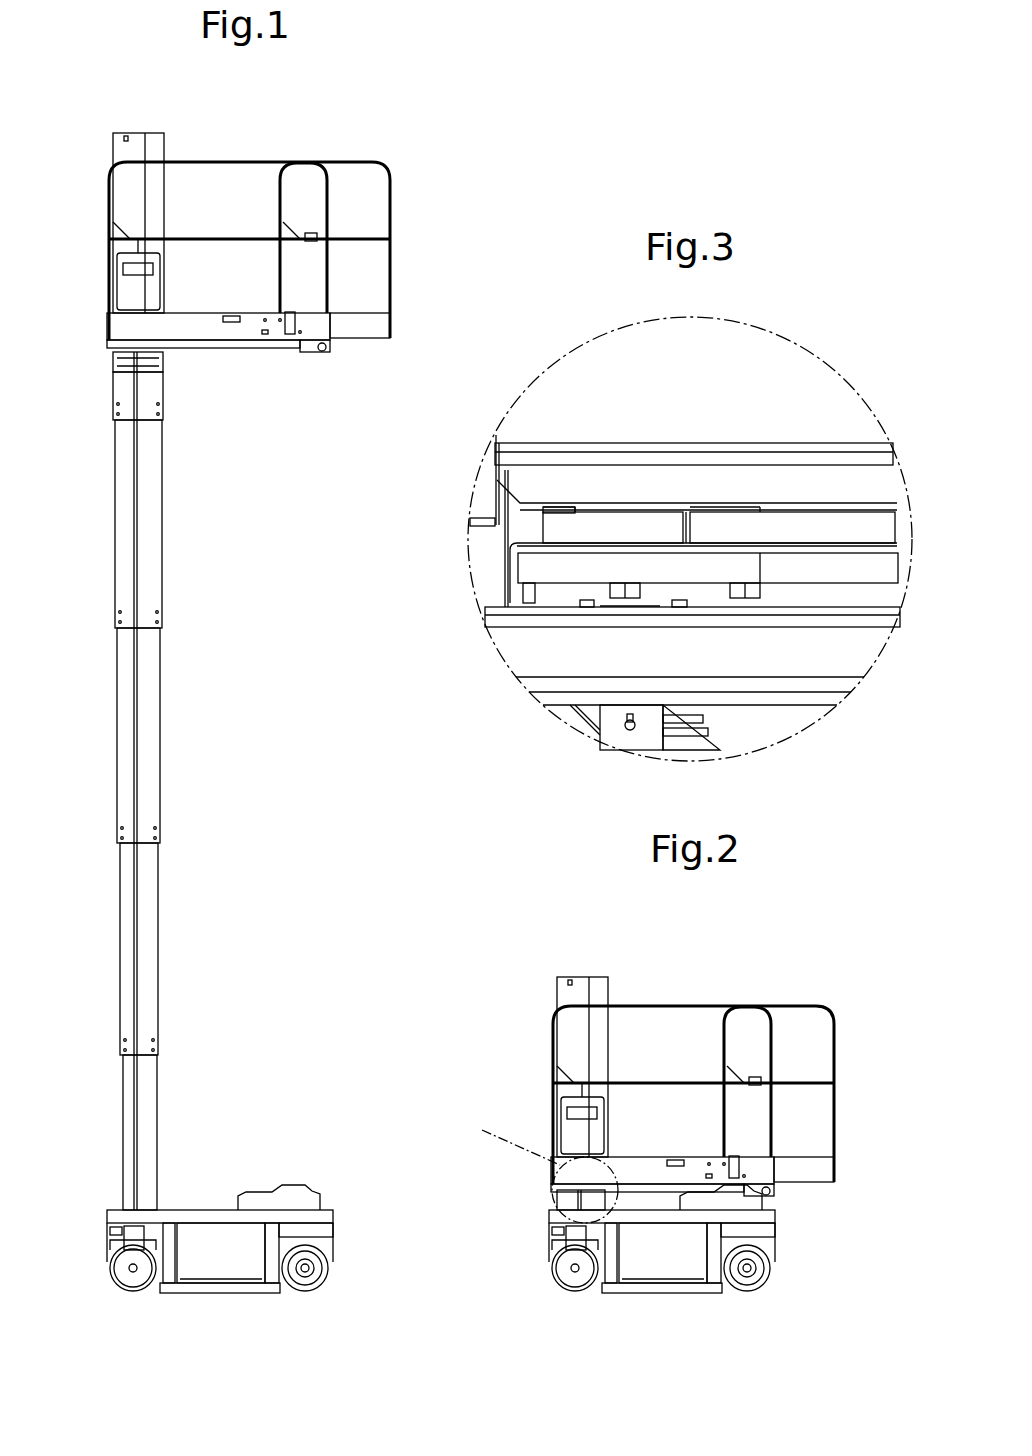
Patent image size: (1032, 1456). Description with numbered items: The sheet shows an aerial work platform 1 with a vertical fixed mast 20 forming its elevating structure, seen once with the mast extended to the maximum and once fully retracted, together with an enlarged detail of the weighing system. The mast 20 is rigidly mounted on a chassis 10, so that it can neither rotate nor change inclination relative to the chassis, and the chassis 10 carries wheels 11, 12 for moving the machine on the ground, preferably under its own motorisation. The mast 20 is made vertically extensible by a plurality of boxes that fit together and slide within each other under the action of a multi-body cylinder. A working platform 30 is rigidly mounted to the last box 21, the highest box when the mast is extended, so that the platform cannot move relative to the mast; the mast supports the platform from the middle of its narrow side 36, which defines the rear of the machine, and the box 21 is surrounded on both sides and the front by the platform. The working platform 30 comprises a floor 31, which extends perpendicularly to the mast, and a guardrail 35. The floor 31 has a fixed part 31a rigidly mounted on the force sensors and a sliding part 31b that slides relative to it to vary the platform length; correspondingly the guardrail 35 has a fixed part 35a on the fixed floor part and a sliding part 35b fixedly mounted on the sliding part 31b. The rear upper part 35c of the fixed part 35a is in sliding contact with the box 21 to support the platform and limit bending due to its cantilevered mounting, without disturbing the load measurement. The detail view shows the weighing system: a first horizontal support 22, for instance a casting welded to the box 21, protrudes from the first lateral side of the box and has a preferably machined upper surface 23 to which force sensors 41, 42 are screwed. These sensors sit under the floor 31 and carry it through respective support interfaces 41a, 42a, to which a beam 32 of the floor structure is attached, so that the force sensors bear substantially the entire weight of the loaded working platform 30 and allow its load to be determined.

In FIG. 1, the aerial work platform 1 is at (288, 718).
In FIG. 2, the aerial work platform 1 is at (662, 1136).
In FIG. 1, the chassis 10 is at (220, 1285).
In FIG. 2, the chassis 10 is at (643, 1285).
In FIG. 1, the wheel 11 is at (133, 1292).
In FIG. 2, the wheel 11 is at (575, 1292).
In FIG. 1, the wheel 12 is at (305, 1292).
In FIG. 2, the wheel 12 is at (748, 1292).
In FIG. 1, the vertical fixed mast 20 is at (166, 712).
In FIG. 1, the last box 21 is at (120, 143).
In FIG. 2, the last box 21 is at (566, 984).
In FIG. 3, the first horizontal support 22 is at (560, 568).
In FIG. 3, the upper surface 23 is at (648, 550).
In FIG. 1, the working platform 30 is at (288, 262).
In FIG. 2, the working platform 30 is at (662, 1117).
In FIG. 1, the floor 31 is at (276, 393).
In FIG. 2, the floor 31 is at (716, 1221).
In FIG. 1, the fixed part 31a is at (250, 350).
In FIG. 2, the fixed part 31a is at (820, 1172).
In FIG. 1, the sliding part 31b is at (360, 344).
In FIG. 2, the sliding part 31b is at (648, 1175).
In FIG. 3, the beam 32 is at (672, 482).
In FIG. 1, the guardrail 35 is at (288, 195).
In FIG. 2, the guardrail 35 is at (662, 1035).
In FIG. 1, the fixed part of guardrail 35a is at (252, 156).
In FIG. 2, the fixed part of guardrail 35a is at (672, 1000).
In FIG. 1, the sliding part of guardrail 35b is at (398, 162).
In FIG. 2, the sliding part of guardrail 35b is at (834, 1004).
In FIG. 1, the rear upper part 35c is at (104, 160).
In FIG. 2, the rear upper part 35c is at (548, 1005).
In FIG. 1, the narrow side 36 is at (104, 252).
In FIG. 2, the narrow side 36 is at (546, 1067).
In FIG. 3, the force sensor 41 is at (582, 422).
In FIG. 3, the support interface 41a is at (558, 500).
In FIG. 3, the force sensor 42 is at (793, 423).
In FIG. 3, the support interface 42a is at (808, 500).